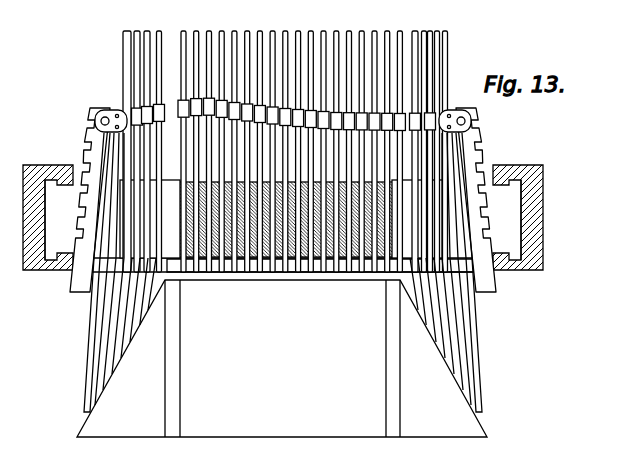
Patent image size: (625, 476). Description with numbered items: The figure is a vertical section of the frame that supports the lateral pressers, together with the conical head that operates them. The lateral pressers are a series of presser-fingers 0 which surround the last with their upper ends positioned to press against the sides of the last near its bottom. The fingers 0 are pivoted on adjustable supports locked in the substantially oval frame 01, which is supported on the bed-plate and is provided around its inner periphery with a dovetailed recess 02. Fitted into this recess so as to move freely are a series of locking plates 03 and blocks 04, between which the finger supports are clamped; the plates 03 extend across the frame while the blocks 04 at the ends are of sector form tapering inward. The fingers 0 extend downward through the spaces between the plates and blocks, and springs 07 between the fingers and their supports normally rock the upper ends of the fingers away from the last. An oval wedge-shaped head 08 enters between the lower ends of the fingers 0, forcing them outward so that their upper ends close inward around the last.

The presser-finger 0 is at (300, 40).
The frame 01 is at (28, 236).
The dovetailed recess 02 is at (283, 220).
The locking plate 03 is at (284, 275).
The block 04 is at (315, 219).
The spring 07 is at (108, 228).
The wedge-shaped head 08 is at (282, 347).